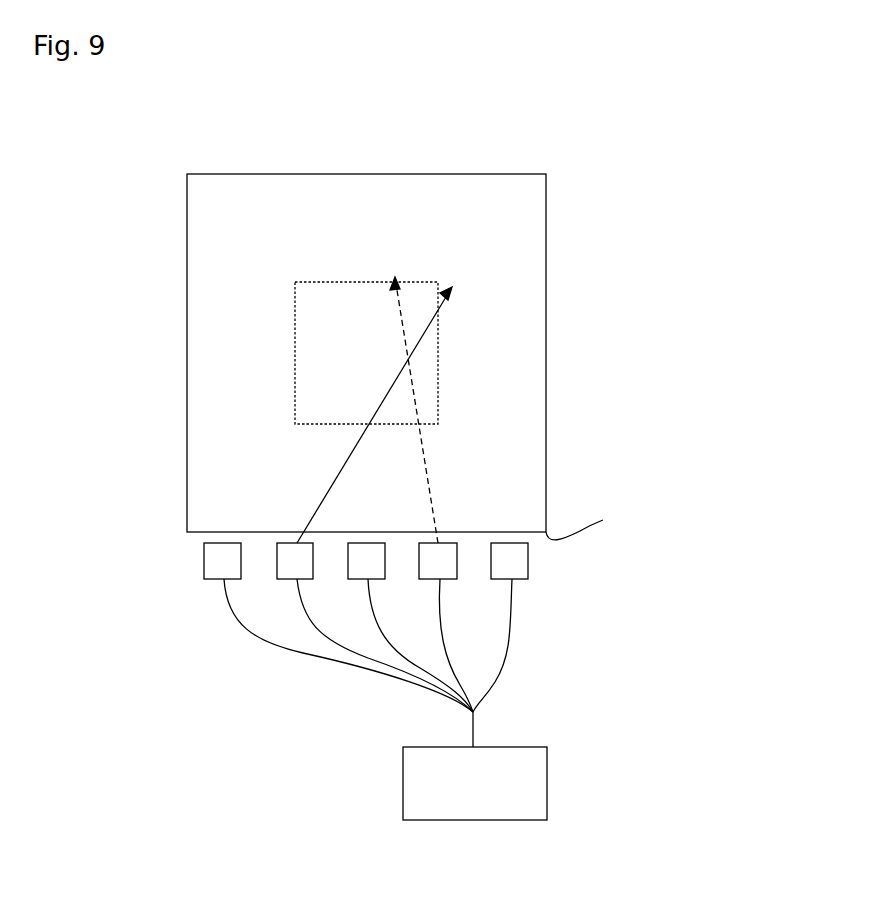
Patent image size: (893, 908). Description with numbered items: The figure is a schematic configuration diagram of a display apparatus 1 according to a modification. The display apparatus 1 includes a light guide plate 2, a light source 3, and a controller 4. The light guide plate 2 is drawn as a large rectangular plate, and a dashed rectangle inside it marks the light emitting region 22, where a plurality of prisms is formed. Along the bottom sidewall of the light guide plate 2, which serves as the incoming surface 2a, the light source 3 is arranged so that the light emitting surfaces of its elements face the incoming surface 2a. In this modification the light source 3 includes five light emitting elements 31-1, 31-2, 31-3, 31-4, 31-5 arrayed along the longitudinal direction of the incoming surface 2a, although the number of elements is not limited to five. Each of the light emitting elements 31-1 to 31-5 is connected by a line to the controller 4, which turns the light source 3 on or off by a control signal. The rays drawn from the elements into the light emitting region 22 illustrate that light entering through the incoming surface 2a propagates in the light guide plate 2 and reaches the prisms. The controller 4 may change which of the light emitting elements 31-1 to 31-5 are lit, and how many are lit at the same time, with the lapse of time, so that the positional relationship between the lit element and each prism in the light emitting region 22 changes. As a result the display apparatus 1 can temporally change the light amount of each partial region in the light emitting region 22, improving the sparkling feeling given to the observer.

The display apparatus 1 is at (688, 620).
The light guide plate 2 is at (546, 465).
The incoming surface 2a is at (588, 524).
The light emitting region 22 is at (438, 358).
The light source 3 is at (385, 626).
The light emitting element 31-1 is at (213, 580).
The light emitting element 31-2 is at (285, 580).
The light emitting element 31-3 is at (358, 580).
The light emitting element 31-4 is at (447, 580).
The light emitting element 31-5 is at (517, 580).
The controller 4 is at (513, 820).